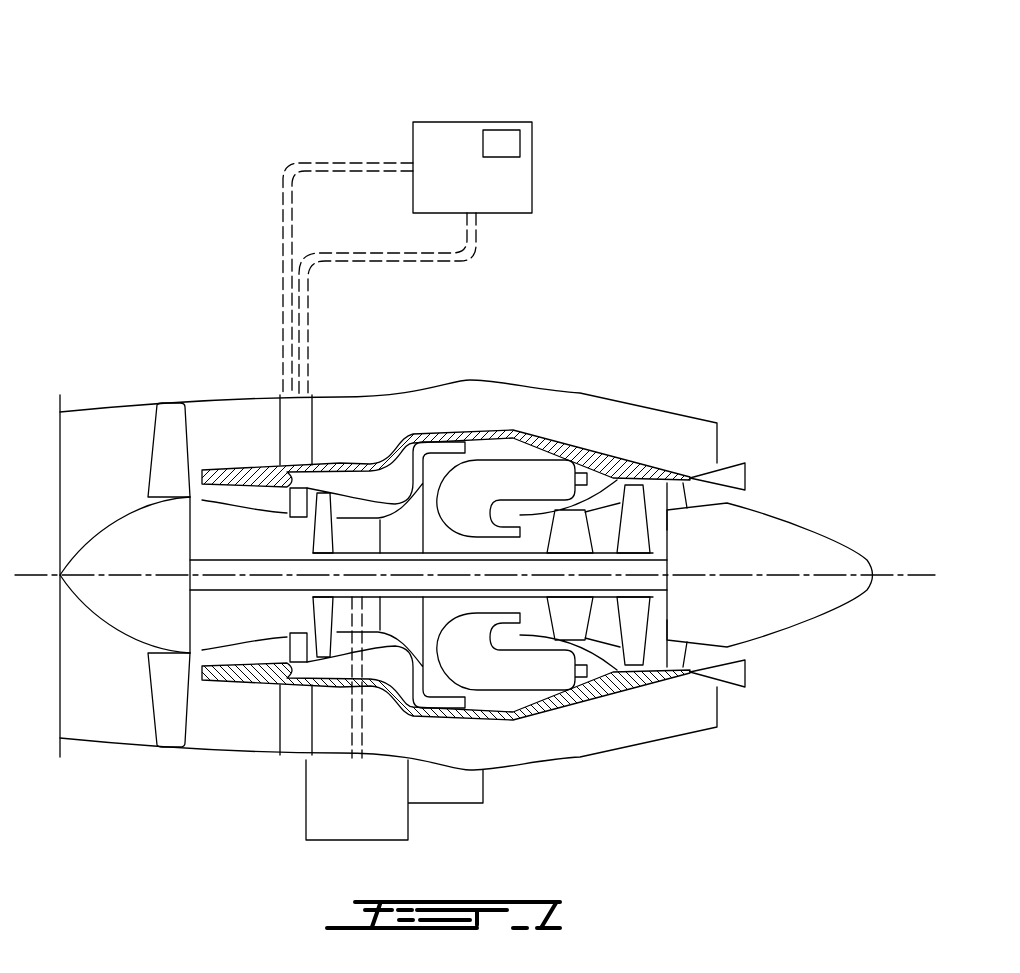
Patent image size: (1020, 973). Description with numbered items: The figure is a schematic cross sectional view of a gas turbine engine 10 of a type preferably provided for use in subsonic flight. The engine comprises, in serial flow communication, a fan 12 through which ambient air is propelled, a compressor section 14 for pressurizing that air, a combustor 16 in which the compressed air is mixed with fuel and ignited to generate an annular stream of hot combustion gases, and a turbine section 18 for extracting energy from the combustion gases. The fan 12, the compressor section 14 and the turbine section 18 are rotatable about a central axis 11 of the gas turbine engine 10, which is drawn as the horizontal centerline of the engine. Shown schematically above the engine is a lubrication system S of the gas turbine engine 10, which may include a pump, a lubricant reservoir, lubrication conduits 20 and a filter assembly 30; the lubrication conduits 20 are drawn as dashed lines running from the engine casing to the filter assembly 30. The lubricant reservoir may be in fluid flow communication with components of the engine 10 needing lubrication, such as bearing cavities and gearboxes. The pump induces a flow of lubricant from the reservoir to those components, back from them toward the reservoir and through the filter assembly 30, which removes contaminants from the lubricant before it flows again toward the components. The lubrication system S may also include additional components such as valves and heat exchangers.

The lubrication system S is at (292, 133).
The gas turbine engine 10 is at (622, 357).
The central axis 11 is at (900, 575).
The fan 12 is at (167, 685).
The compressor section 14 is at (370, 507).
The combustor 16 is at (513, 473).
The turbine section 18 is at (603, 622).
The lubrication conduits 20 is at (283, 263).
The filter assembly 30 is at (505, 128).